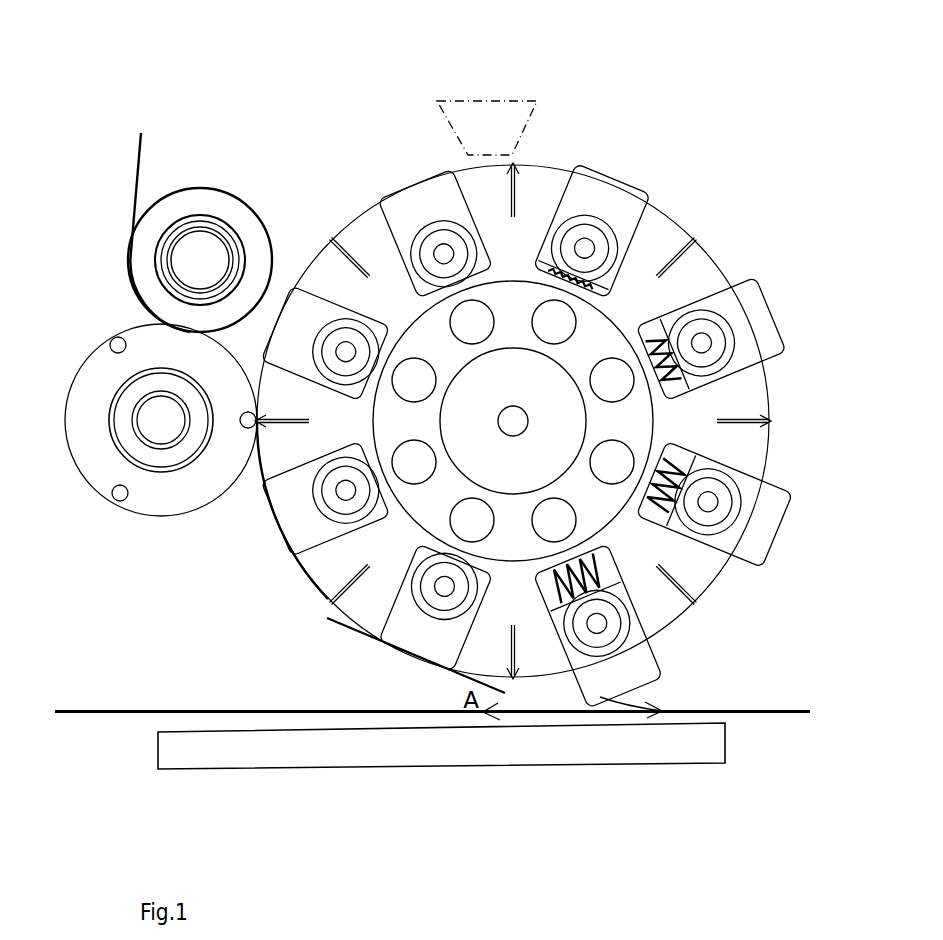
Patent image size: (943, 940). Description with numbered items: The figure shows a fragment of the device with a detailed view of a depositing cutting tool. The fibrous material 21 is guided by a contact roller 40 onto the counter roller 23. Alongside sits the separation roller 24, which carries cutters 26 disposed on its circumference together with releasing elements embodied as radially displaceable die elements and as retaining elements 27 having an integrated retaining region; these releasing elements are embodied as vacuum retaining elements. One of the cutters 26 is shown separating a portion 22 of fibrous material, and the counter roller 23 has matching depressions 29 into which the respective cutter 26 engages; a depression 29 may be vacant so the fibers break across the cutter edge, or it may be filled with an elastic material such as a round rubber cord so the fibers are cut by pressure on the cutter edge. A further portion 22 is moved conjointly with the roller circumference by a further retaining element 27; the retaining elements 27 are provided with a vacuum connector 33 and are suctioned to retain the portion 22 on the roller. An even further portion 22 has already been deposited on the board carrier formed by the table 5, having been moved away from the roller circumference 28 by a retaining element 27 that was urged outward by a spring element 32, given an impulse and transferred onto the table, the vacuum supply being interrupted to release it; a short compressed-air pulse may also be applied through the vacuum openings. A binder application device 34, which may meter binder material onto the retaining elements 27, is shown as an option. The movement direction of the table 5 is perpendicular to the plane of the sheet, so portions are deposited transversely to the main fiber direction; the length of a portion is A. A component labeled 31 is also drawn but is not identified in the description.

The table 5 is at (725, 740).
The fibrous material 21 is at (135, 177).
The portion 22 is at (330, 595).
The counter roller 23 is at (80, 438).
The separation roller 24 is at (365, 227).
The cutter 26 is at (693, 240).
The retaining element 27 is at (606, 182).
The roller circumference 28 is at (310, 260).
The depression 29 is at (112, 497).
The slide block 31 is at (703, 340).
The spring element 32 is at (668, 435).
The vacuum connector 33 is at (648, 522).
The binder application device 34 is at (497, 100).
The contact roller 40 is at (213, 190).